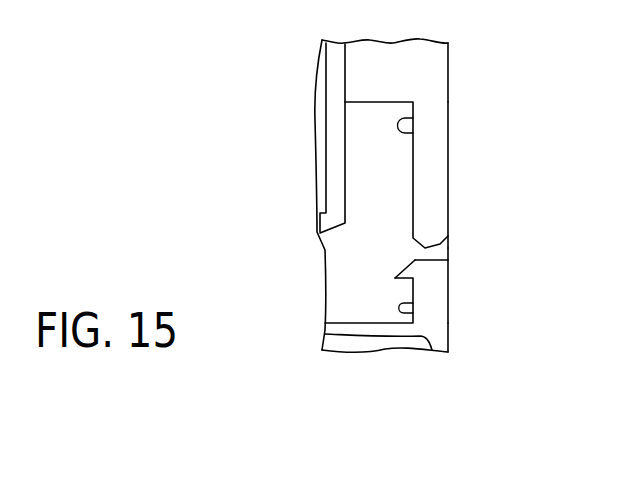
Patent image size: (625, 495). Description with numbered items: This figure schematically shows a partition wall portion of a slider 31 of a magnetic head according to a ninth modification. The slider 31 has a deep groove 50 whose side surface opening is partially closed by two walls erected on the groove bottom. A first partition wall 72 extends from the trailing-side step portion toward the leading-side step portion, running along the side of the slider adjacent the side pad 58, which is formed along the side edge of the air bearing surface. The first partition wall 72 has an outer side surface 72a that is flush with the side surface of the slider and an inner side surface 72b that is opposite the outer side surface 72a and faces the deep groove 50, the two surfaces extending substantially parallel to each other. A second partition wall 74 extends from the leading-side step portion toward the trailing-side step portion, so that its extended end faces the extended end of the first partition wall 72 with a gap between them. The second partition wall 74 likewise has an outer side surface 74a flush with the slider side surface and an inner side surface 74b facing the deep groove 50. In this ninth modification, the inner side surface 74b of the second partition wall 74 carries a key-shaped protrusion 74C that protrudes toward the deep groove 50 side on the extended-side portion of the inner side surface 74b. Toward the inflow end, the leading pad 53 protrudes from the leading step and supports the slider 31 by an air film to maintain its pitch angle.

The slider 31 is at (280, 76).
The deep groove 50 is at (360, 263).
The leading pad 53 is at (438, 336).
The side pad 58 is at (432, 66).
The first partition wall 72 is at (440, 194).
The outer side surface 72a is at (450, 165).
The inner side surface 72b is at (413, 118).
The second partition wall 74 is at (438, 291).
The outer side surface 74a is at (448, 279).
The inner side surface 74b is at (413, 312).
The key-shaped protrusion 74C is at (405, 266).